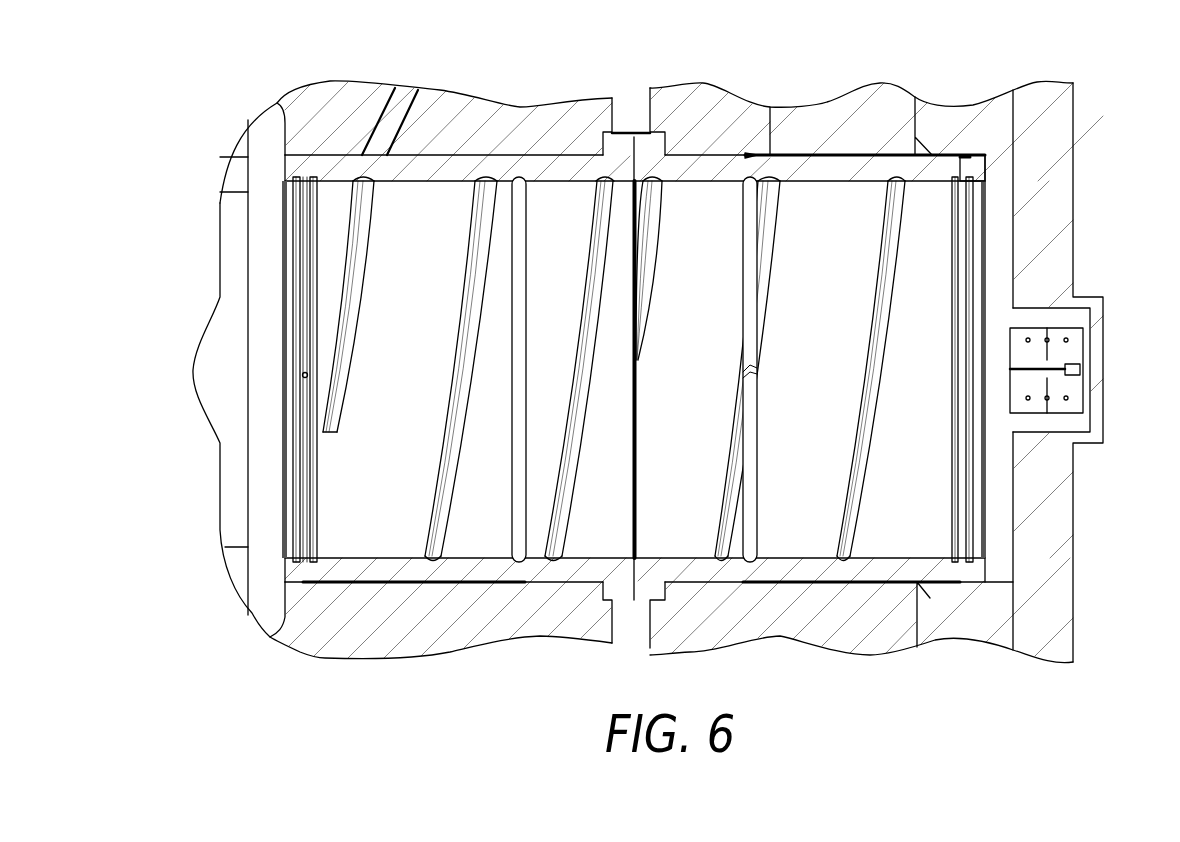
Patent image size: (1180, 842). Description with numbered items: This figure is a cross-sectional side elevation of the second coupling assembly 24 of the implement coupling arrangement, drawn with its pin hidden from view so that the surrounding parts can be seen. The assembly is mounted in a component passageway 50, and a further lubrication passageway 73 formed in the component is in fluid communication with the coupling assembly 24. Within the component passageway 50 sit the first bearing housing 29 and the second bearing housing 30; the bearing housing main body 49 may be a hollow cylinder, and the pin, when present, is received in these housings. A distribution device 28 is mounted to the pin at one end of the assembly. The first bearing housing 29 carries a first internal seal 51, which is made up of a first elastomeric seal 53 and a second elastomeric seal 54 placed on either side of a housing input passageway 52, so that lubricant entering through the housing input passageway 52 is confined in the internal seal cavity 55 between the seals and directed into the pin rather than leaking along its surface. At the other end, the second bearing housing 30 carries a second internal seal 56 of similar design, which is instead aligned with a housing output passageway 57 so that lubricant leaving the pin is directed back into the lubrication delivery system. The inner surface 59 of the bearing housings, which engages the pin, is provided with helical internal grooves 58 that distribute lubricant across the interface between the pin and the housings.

The second coupling assembly 24 is at (1097, 88).
The distribution device 28 is at (1078, 352).
The first bearing housing 29 is at (555, 166).
The second bearing housing 30 is at (686, 166).
The bearing housing main body 49 is at (778, 166).
The component passageway 50 is at (566, 583).
The first internal seal 51 is at (300, 450).
The housing input passageway 52 is at (308, 376).
The first elastomeric seal 53 is at (292, 556).
The second elastomeric seal 54 is at (308, 557).
The internal seal cavity 55 is at (305, 289).
The second internal seal 56 is at (972, 488).
The housing output passageway 57 is at (962, 168).
The internal groove 58 is at (860, 450).
The inner surface 59 is at (838, 218).
The lubrication passageway 73 is at (402, 101).